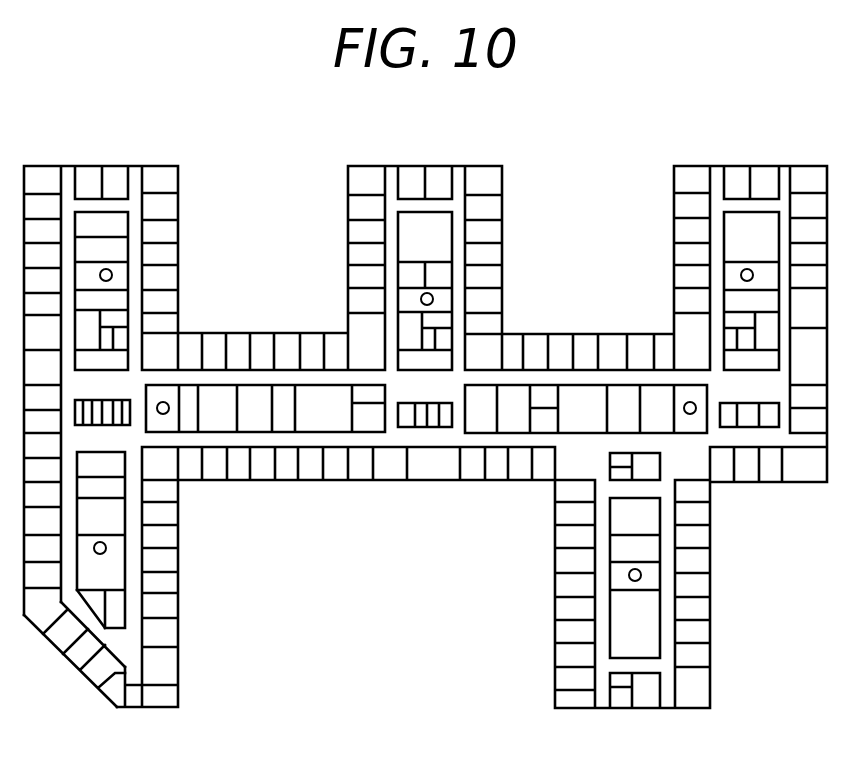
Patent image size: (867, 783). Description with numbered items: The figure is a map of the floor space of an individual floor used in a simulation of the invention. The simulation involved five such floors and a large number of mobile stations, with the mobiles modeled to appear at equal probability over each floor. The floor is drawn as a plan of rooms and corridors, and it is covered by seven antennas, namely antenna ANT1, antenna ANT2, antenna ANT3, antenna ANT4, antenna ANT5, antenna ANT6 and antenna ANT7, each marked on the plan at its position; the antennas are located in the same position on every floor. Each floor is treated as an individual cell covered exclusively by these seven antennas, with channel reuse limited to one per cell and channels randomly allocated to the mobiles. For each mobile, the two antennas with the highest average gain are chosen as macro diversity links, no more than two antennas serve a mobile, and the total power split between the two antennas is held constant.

The antenna ANT1 is at (134, 276).
The antenna ANT2 is at (456, 300).
The antenna ANT3 is at (776, 276).
The antenna ANT4 is at (193, 409).
The antenna ANT5 is at (720, 409).
The antenna ANT6 is at (178, 548).
The antenna ANT7 is at (710, 575).